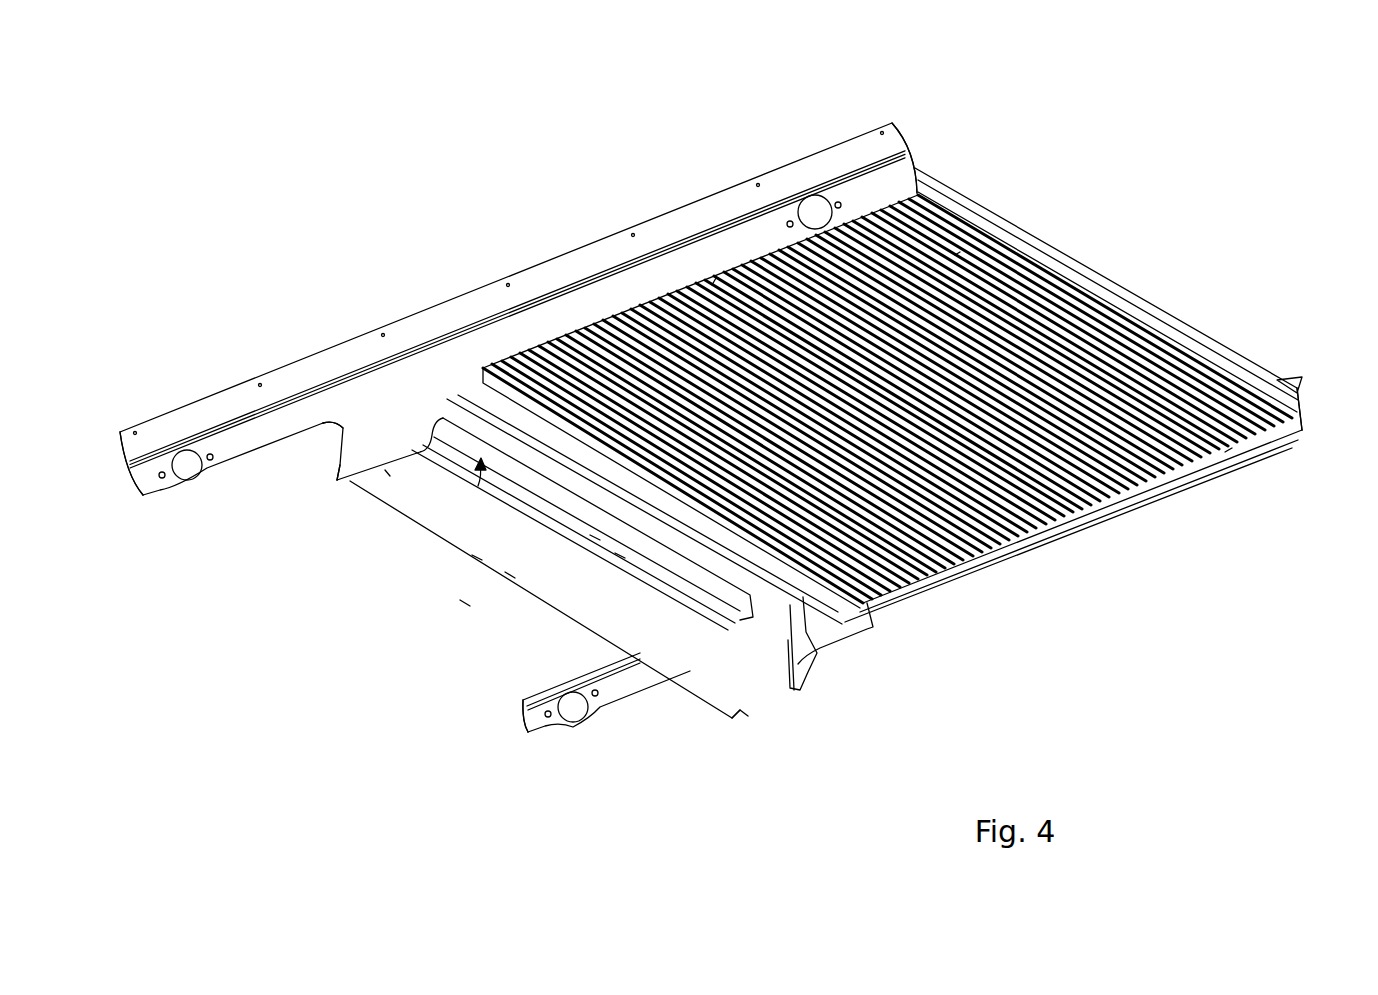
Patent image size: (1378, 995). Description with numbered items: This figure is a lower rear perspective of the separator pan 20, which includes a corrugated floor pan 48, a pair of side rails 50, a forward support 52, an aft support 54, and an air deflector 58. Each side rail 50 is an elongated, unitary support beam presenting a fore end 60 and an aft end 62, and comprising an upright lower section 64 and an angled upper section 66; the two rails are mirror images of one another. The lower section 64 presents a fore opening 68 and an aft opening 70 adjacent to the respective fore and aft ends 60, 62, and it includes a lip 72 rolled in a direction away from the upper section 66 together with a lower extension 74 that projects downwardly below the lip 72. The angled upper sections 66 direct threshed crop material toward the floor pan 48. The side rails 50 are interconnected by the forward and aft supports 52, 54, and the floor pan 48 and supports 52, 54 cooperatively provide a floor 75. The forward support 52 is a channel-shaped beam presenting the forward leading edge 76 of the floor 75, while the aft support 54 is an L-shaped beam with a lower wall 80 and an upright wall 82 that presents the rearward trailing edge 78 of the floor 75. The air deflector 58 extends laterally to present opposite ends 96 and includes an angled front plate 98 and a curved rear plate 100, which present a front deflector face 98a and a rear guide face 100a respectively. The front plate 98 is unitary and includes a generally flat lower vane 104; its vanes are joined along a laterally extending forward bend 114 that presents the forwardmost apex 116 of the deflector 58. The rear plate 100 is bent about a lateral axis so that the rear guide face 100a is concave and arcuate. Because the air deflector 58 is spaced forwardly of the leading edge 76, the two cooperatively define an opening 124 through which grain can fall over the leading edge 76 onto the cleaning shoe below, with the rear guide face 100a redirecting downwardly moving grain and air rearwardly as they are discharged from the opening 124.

The separator pan 20 is at (1130, 142).
The corrugated floor pan 48 is at (1008, 292).
The side rail 50 is at (711, 449).
The forward support 52 is at (1050, 571).
The aft support 54 is at (1122, 299).
The air deflector 58 is at (538, 610).
The fore end 60 is at (137, 482).
The aft end 62 is at (920, 132).
The lower section 64 is at (240, 445).
The upper section 66 is at (300, 375).
The fore opening 68 is at (186, 480).
The aft opening 70 is at (813, 200).
The lip 72 is at (712, 283).
The lower extension 74 is at (370, 453).
The floor 75 is at (955, 255).
The forward leading edge 76 is at (792, 607).
The rearward trailing edge 78 is at (1210, 352).
The lower wall 80 is at (1225, 452).
The upright wall 82 is at (1240, 374).
The opposite ends 96 is at (390, 460).
The front plate 98 is at (477, 552).
The front deflector face 98a is at (465, 600).
The rear plate 100 is at (595, 537).
The rear guide face 100a is at (620, 555).
The lower vane 104 is at (510, 573).
The forward bend 114 is at (350, 493).
The forwardmost apex 116 is at (345, 486).
The opening 124 is at (477, 485).